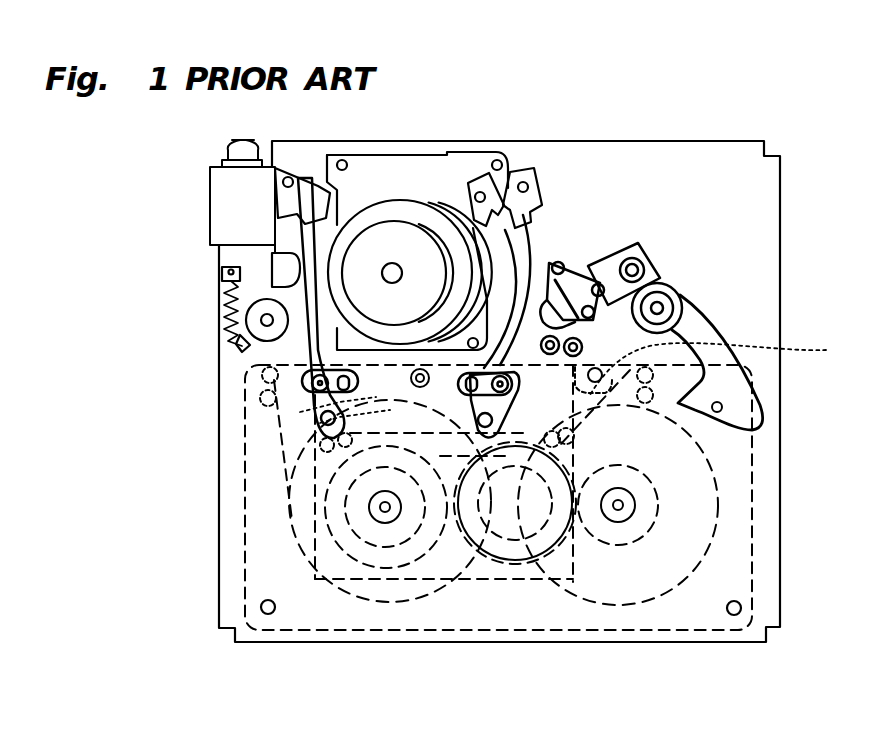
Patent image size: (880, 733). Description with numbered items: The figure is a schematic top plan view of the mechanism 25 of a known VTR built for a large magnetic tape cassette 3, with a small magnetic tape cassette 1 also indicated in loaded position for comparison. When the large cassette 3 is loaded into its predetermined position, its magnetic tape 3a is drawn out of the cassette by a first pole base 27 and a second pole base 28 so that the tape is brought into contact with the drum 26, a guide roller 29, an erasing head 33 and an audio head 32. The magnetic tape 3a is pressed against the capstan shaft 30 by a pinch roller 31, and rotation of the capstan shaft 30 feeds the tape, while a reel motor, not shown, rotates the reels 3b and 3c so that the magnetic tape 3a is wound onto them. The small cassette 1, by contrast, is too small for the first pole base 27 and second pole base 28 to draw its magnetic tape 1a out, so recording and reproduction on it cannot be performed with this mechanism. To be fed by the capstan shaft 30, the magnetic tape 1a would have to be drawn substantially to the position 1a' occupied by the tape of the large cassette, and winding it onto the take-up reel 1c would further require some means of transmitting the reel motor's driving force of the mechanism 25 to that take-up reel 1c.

The small magnetic tape cassette 1 is at (480, 565).
The magnetic tape 1a is at (249, 413).
The position 1a' is at (501, 417).
The take-up reel 1c is at (518, 548).
The large magnetic tape cassette 3 is at (732, 565).
The magnetic tape 3a is at (842, 384).
The reel 3b is at (645, 583).
The reel 3c is at (302, 515).
The mechanism 25 is at (686, 188).
The drum 26 is at (390, 208).
The first pole base 27 is at (317, 432).
The second pole base 28 is at (490, 408).
The guide roller 29 is at (262, 318).
The capstan shaft 30 is at (597, 377).
The pinch roller 31 is at (674, 297).
The audio head 32 is at (578, 283).
The erasing head 33 is at (276, 270).